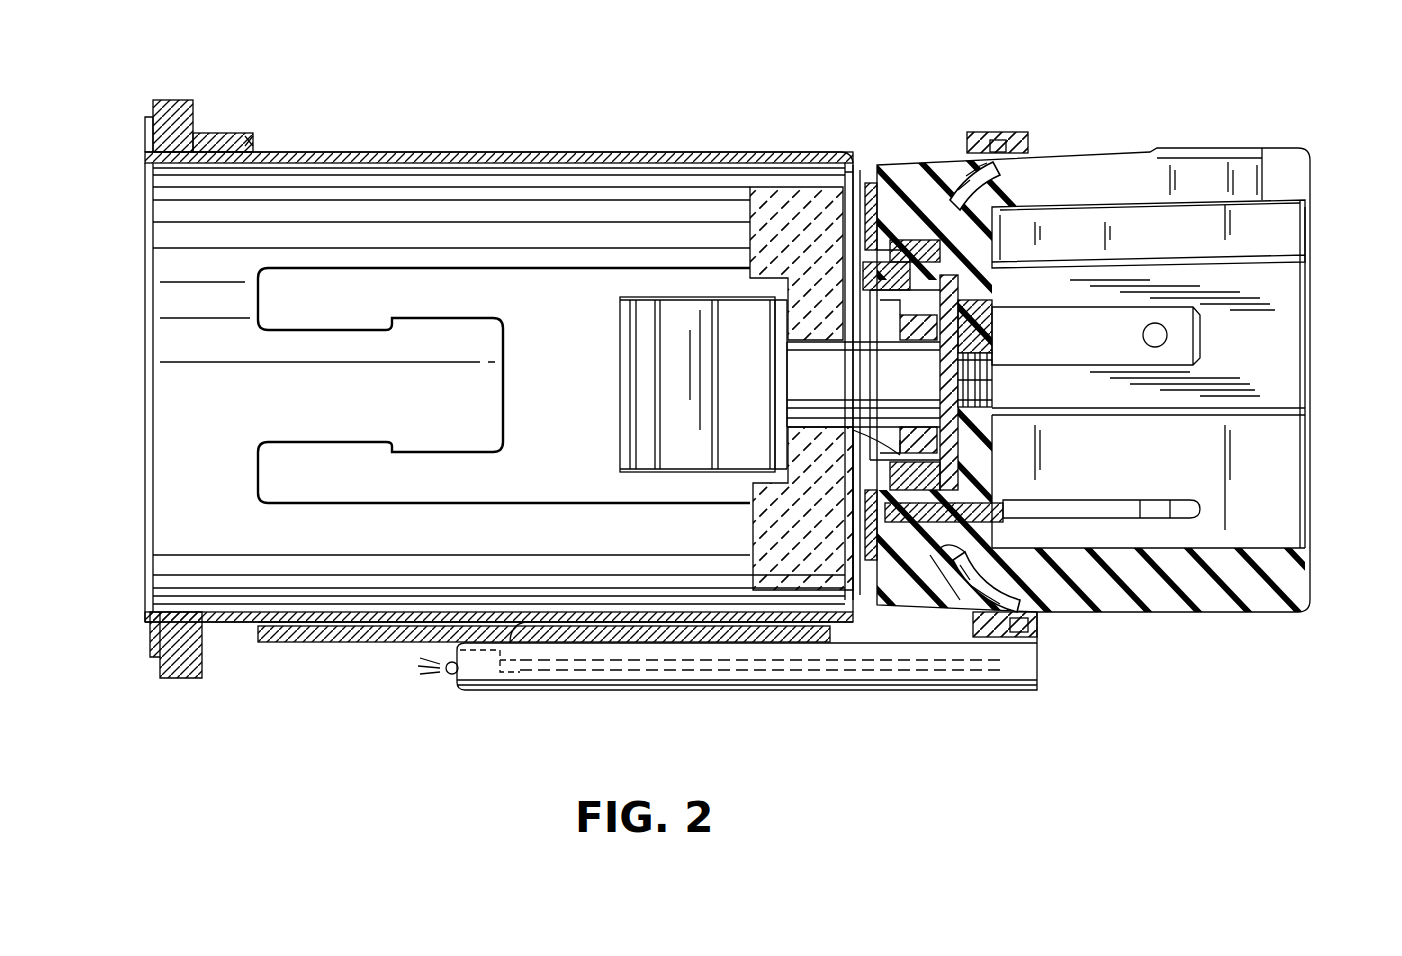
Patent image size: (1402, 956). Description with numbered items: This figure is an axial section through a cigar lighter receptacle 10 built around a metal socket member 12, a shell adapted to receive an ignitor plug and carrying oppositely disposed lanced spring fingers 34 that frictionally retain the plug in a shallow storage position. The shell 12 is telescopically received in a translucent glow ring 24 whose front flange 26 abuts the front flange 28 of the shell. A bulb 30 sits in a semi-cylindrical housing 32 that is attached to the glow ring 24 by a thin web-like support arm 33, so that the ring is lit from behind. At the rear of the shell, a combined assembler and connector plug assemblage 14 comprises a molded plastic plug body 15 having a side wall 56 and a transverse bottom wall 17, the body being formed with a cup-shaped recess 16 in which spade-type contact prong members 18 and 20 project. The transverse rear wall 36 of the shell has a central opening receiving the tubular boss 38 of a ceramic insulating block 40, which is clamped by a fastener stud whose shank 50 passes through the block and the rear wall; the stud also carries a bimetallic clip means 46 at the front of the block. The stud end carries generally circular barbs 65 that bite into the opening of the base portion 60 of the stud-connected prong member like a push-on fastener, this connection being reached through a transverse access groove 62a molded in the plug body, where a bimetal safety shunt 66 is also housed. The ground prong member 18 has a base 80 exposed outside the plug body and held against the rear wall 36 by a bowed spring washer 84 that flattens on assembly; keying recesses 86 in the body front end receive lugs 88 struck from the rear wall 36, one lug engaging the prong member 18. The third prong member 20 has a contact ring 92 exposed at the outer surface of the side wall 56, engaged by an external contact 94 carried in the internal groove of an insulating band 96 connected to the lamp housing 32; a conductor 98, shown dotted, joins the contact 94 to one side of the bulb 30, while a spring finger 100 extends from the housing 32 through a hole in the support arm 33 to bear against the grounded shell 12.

The cigar lighter receptacle 10 is at (576, 133).
The socket member 12 is at (314, 408).
The plug assemblage 14 is at (1220, 632).
The plug body 15 is at (1280, 232).
The cup-shaped recess 16 is at (1285, 462).
The transverse bottom wall 17 is at (975, 268).
The second contact prong member 18 is at (1118, 503).
The third contact prong member 20 is at (1178, 345).
The glow ring 24 is at (247, 135).
The front flange 26 is at (188, 112).
The front flange 28 is at (146, 130).
The bulb 30 is at (446, 675).
The semi-cylindrical housing 32 is at (700, 690).
The support arm 33 is at (322, 644).
The lanced spring fingers 34 is at (470, 330).
The transverse rear wall 36 is at (835, 210).
The tubular boss 38 is at (855, 440).
The ceramic insulating block 40 is at (758, 185).
The bimetallic clip means 46 is at (665, 345).
The shank 50 is at (845, 380).
The side wall 56 is at (1118, 158).
The base portion 60 is at (960, 298).
The access groove 62a is at (903, 440).
The barbs 65 is at (985, 383).
The bimetal safety shunt 66 is at (950, 322).
The base 80 is at (860, 520).
The bowed spring washer 84 is at (870, 185).
The keying recesses 86 is at (905, 240).
The lugs 88 is at (896, 262).
The contact ring 92 is at (965, 602).
The external contact 94 is at (992, 140).
The band 96 is at (1008, 142).
The conductor 98 is at (800, 675).
The spring finger 100 is at (520, 650).